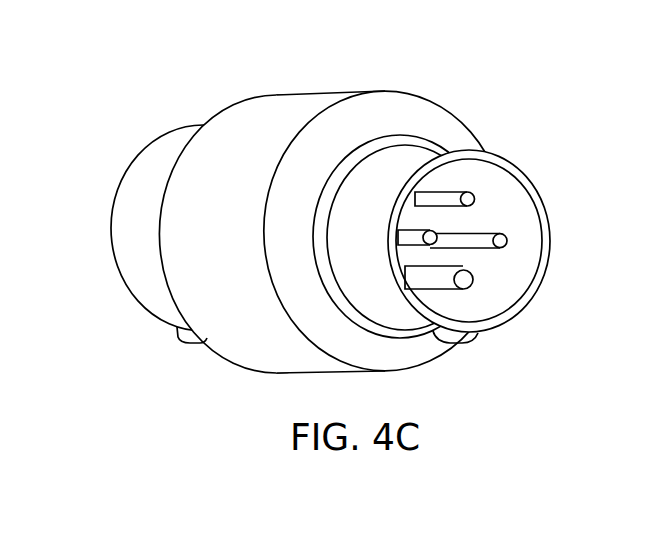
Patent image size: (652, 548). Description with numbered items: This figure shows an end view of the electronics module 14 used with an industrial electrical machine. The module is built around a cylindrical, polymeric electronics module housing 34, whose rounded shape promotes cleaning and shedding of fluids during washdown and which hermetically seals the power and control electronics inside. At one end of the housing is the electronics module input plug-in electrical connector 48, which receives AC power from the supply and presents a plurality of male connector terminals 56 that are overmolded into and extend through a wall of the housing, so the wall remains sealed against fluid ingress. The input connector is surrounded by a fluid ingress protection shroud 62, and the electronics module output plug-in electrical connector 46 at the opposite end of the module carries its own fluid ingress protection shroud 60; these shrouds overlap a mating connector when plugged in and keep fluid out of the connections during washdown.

The electronics module 14 is at (502, 70).
The electronics module housing 34 is at (316, 92).
The electronics module output plug-in electrical connector 46 is at (112, 300).
The electronics module input plug-in electrical connector 48 is at (558, 148).
The male connector terminals 56 is at (467, 192).
The fluid ingress protection shroud 60 is at (112, 220).
The fluid ingress protection shroud 62 is at (548, 270).